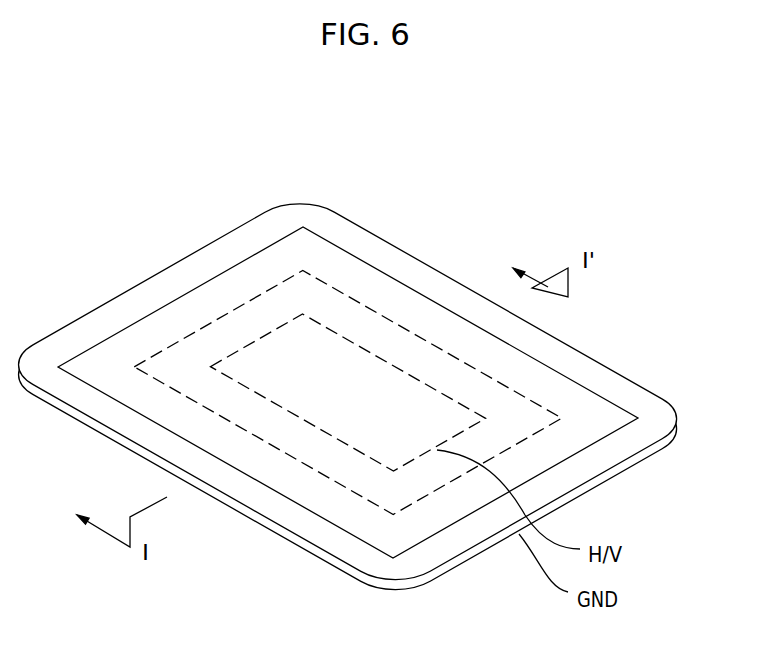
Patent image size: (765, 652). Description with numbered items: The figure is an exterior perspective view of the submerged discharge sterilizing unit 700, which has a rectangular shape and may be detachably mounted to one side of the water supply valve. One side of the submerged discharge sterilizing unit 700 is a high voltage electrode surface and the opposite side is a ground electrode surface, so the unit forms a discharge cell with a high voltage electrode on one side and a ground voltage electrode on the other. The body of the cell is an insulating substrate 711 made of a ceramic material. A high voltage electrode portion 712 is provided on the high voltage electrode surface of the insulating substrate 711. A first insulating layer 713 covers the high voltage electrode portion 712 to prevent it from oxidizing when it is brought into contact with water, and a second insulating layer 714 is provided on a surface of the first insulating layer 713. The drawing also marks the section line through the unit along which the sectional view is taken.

The submerged discharge sterilizing unit 700 is at (348, 392).
The insulating substrate 711 is at (595, 467).
The high voltage electrode portion 712 is at (352, 342).
The first insulating layer 713 is at (520, 393).
The second insulating layer 714 is at (181, 296).